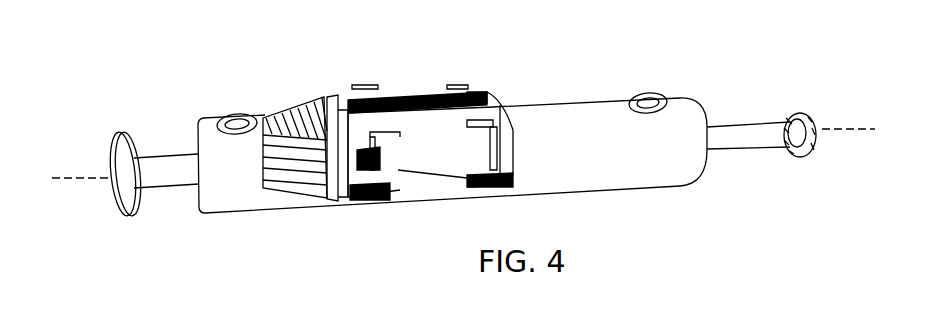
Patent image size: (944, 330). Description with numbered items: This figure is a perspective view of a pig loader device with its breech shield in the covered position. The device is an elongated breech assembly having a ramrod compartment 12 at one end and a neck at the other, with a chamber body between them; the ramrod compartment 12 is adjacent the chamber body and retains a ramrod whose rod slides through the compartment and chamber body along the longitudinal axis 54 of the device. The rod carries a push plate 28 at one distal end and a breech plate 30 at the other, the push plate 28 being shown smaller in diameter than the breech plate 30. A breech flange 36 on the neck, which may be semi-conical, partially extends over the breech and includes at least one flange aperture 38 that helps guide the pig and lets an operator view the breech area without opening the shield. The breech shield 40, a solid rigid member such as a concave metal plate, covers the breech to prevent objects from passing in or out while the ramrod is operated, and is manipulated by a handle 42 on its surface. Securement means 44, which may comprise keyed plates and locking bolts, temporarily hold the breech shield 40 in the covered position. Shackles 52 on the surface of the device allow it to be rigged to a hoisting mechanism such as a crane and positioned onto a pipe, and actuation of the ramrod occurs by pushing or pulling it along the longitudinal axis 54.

The ramrod compartment 12 is at (563, 102).
The push plate 28 is at (800, 112).
The breech plate 30 is at (130, 143).
The breech flange 36 is at (340, 127).
The flange aperture 38 is at (290, 103).
The breech shield 40 is at (403, 93).
The handle 42 is at (428, 90).
The securement means 44 is at (393, 170).
The shackle 52 is at (225, 113).
The longitudinal axis 54 is at (70, 176).